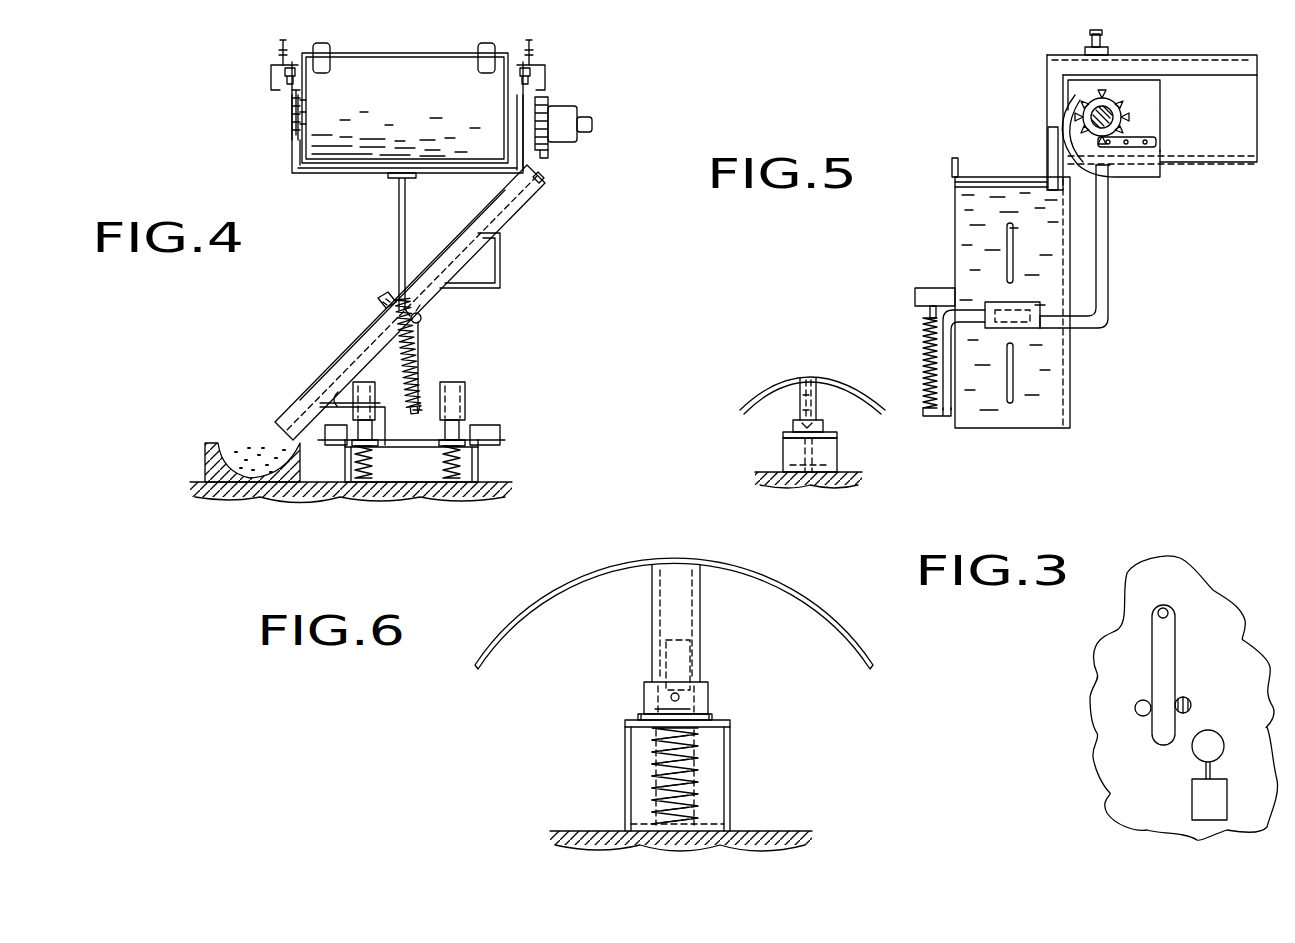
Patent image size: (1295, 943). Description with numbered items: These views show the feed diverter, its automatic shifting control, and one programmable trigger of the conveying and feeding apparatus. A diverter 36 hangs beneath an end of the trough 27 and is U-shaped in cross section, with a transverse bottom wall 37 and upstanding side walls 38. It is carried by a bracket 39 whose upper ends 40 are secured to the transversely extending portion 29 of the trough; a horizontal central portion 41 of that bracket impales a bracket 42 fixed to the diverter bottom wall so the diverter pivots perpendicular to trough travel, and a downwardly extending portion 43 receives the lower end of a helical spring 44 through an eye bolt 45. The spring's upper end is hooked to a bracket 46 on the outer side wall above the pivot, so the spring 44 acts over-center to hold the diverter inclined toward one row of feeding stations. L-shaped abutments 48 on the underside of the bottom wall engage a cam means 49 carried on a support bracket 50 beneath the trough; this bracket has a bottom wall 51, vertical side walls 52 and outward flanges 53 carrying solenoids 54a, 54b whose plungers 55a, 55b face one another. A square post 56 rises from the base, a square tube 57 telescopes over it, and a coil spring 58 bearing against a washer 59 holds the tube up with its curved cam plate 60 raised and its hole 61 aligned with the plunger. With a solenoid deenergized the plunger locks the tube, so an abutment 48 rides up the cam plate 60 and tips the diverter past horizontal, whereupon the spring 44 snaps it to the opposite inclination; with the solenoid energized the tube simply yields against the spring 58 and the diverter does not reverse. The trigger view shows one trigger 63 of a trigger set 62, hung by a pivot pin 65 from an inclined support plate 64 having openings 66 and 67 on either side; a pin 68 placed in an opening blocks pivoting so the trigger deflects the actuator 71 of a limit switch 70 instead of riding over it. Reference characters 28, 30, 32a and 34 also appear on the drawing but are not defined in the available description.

In FIG. 4, the trough 27 is at (296, 146).
In FIG. 5, the trough 27 is at (1238, 168).
In FIG. 4, the hanger bracket with roller 28 is at (266, 50).
In FIG. 4, the transversely extending portion 29 is at (345, 173).
In FIG. 5, the transversely extending portion 29 is at (1210, 162).
In FIG. 4, the vertical side member 30 is at (293, 112).
In FIG. 5, the vertical side member 30 is at (1052, 100).
In FIG. 4, the hopper 32a is at (405, 108).
In FIG. 4, the drive sprocket motor 34 is at (590, 115).
In FIG. 5, the drive sprocket motor 34 is at (1168, 120).
In FIG. 4, the diverter 36 is at (511, 229).
In FIG. 5, the diverter 36 is at (946, 216).
In FIG. 4, the bottom wall 37 is at (548, 178).
In FIG. 5, the bottom wall 37 is at (1003, 176).
In FIG. 4, the side walls 38 is at (488, 215).
In FIG. 5, the side walls 38 is at (951, 165).
In FIG. 5, the bracket 39 is at (1111, 311).
In FIG. 4, the upper ends 40 is at (397, 178).
In FIG. 5, the upper ends 40 is at (1110, 172).
In FIG. 5, the central portion 41 is at (1050, 330).
In FIG. 4, the bracket 42 is at (421, 326).
In FIG. 5, the bracket 42 is at (994, 304).
In FIG. 4, the downwardly extending portion 43 is at (421, 345).
In FIG. 5, the downwardly extending portion 43 is at (952, 352).
In FIG. 4, the helical spring 44 is at (417, 365).
In FIG. 5, the helical spring 44 is at (923, 352).
In FIG. 5, the eye bolt 45 is at (930, 415).
In FIG. 4, the bracket 46 is at (376, 306).
In FIG. 5, the bracket 46 is at (914, 296).
In FIG. 4, the L-shaped abutments 48 is at (503, 268).
In FIG. 5, the L-shaped abutments 48 is at (1007, 242).
In FIG. 4, the cam means 49 is at (472, 393).
In FIG. 5, the cam means 49 is at (790, 372).
In FIG. 6, the cam means 49 is at (565, 582).
In FIG. 4, the support bracket 50 is at (398, 497).
In FIG. 5, the support bracket 50 is at (776, 455).
In FIG. 6, the support bracket 50 is at (734, 790).
In FIG. 4, the bottom wall 51 is at (410, 490).
In FIG. 6, the bottom wall 51 is at (652, 824).
In FIG. 4, the side walls 52 is at (485, 462).
In FIG. 5, the side walls 52 is at (783, 460).
In FIG. 6, the side walls 52 is at (633, 763).
In FIG. 4, the flanges 53 is at (500, 437).
In FIG. 5, the flanges 53 is at (836, 440).
In FIG. 6, the flanges 53 is at (635, 727).
In FIG. 4, the solenoid 54a is at (325, 430).
In FIG. 4, the solenoid 54b is at (445, 425).
In FIG. 5, the solenoid 54b is at (792, 428).
In FIG. 6, the solenoid 54b is at (646, 690).
In FIG. 4, the solenoid plunger 55a is at (372, 432).
In FIG. 4, the solenoid plunger 55b is at (430, 443).
In FIG. 6, the solenoid plunger 55b is at (650, 703).
In FIG. 6, the square post 56 is at (702, 766).
In FIG. 6, the square tube 57 is at (703, 617).
In FIG. 6, the coil spring 58 is at (703, 743).
In FIG. 6, the washer 59 is at (713, 714).
In FIG. 4, the curved cam plate 60 is at (467, 402).
In FIG. 5, the curved cam plate 60 is at (778, 394).
In FIG. 6, the curved cam plate 60 is at (744, 580).
In FIG. 6, the hole 61 is at (678, 700).
In FIG. 4, the trigger set 62 is at (284, 132).
In FIG. 3, the trigger 63 is at (1160, 660).
In FIG. 3, the support plate 64 is at (1123, 628).
In FIG. 3, the pivot pin 65 is at (1166, 610).
In FIG. 3, the opening 66 is at (1138, 708).
In FIG. 3, the opening 67 is at (1192, 703).
In FIG. 3, the pin 68 is at (1187, 698).
In FIG. 3, the limit switch 70 is at (1060, 787).
In FIG. 3, the actuator 71 is at (1204, 762).